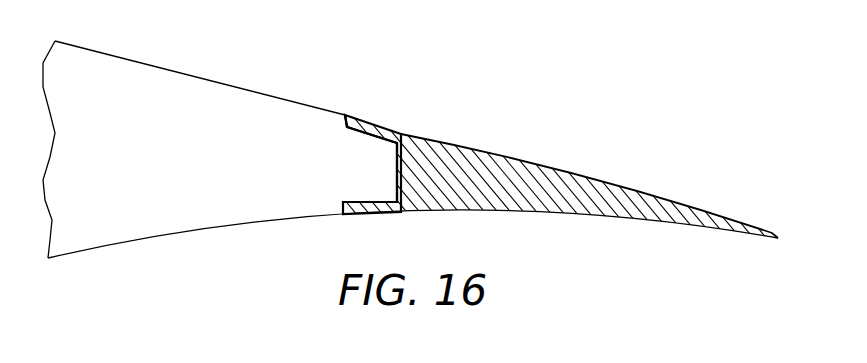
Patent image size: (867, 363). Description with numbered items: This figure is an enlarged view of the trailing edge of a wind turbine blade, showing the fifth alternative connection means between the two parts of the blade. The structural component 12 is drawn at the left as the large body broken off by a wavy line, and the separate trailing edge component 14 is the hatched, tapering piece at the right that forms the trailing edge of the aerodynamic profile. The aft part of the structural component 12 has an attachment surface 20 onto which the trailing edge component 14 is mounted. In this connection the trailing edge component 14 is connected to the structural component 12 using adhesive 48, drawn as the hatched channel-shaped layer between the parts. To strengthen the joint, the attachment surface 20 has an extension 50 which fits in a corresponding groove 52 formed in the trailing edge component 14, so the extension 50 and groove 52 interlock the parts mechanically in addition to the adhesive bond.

The structural component 12 is at (224, 84).
The trailing edge component 14 is at (485, 160).
The attachment surface 20 is at (410, 208).
The adhesive 48 is at (371, 122).
The extension 50 is at (370, 164).
The groove 52 is at (352, 133).